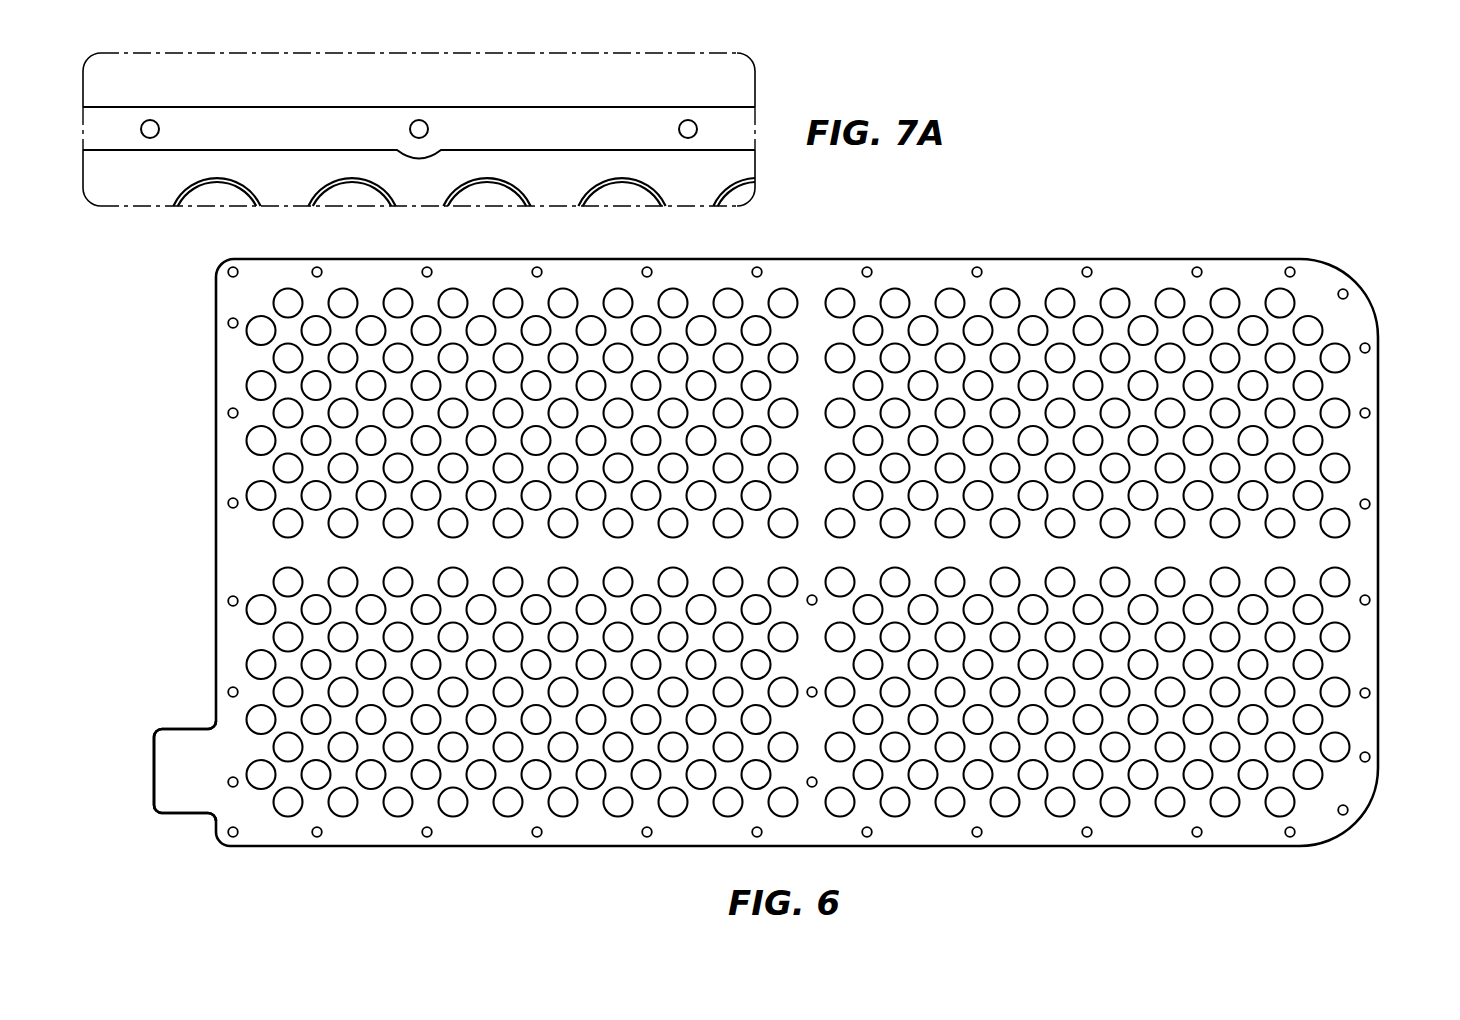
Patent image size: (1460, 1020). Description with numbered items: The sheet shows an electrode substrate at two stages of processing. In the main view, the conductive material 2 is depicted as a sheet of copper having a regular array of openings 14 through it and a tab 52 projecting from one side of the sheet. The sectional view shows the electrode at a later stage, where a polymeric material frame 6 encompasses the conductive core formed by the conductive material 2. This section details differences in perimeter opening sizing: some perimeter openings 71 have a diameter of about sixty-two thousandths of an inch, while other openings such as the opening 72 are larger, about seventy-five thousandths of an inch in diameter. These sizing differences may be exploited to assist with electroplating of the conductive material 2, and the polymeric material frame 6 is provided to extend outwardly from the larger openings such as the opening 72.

In FIG. 6, the conductive material 2 is at (1320, 280).
In FIG. 6, the openings 14 is at (1060, 302).
In FIG. 6, the tab 52 is at (170, 753).
In FIG. 7A, the polymeric material frame 6 is at (240, 129).
In FIG. 7A, the perimeter openings 71 is at (688, 121).
In FIG. 7A, the opening 72 is at (419, 122).